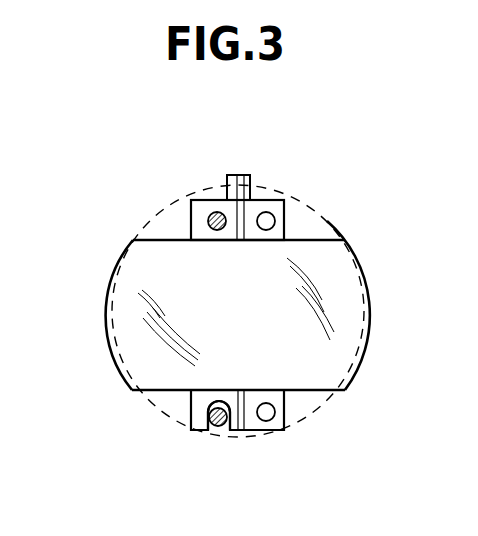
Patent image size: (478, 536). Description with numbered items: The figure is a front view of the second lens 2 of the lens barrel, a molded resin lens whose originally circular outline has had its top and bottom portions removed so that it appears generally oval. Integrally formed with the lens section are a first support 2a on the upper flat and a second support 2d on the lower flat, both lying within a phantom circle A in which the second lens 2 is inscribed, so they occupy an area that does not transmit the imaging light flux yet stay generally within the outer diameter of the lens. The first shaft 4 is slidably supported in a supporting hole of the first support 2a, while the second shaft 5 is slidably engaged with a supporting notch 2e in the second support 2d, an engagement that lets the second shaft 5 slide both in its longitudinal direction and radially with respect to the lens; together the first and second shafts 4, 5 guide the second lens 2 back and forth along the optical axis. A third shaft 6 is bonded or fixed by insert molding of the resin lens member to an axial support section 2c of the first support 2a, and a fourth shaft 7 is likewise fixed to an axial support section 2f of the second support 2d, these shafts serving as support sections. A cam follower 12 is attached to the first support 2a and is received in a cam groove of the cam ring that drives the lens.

The second lens 2 is at (128, 277).
The first support 2a is at (208, 200).
The axial support section 2c is at (329, 202).
The third shaft 6 is at (274, 215).
The second support 2d is at (284, 400).
The supporting notch 2e is at (212, 402).
The axial support section 2f is at (326, 428).
The fourth shaft 7 is at (272, 418).
The first shaft 4 is at (207, 221).
The second shaft 5 is at (218, 427).
The cam follower 12 is at (240, 178).
The phantom circle A is at (137, 397).